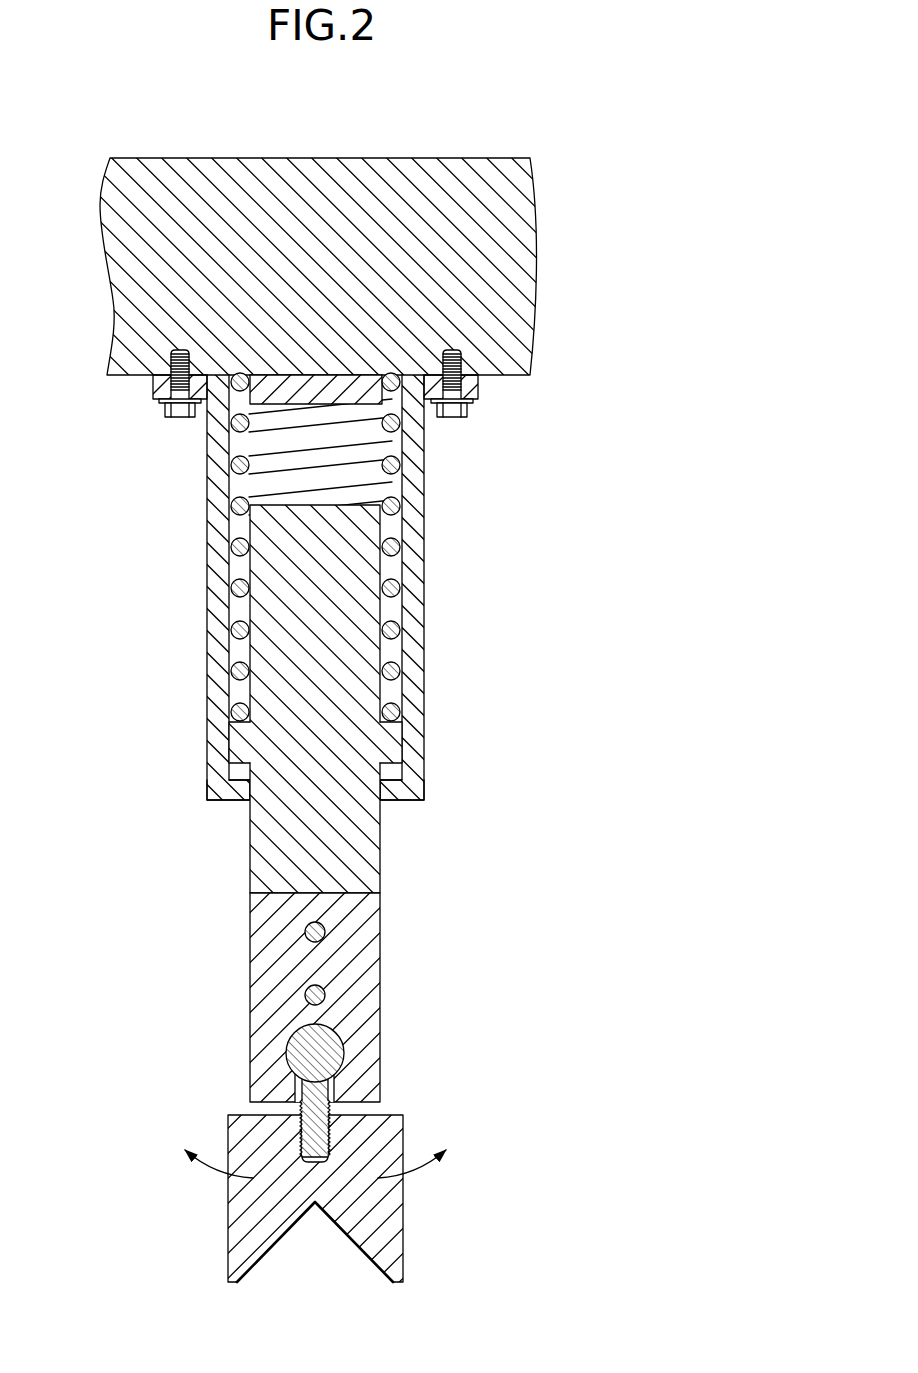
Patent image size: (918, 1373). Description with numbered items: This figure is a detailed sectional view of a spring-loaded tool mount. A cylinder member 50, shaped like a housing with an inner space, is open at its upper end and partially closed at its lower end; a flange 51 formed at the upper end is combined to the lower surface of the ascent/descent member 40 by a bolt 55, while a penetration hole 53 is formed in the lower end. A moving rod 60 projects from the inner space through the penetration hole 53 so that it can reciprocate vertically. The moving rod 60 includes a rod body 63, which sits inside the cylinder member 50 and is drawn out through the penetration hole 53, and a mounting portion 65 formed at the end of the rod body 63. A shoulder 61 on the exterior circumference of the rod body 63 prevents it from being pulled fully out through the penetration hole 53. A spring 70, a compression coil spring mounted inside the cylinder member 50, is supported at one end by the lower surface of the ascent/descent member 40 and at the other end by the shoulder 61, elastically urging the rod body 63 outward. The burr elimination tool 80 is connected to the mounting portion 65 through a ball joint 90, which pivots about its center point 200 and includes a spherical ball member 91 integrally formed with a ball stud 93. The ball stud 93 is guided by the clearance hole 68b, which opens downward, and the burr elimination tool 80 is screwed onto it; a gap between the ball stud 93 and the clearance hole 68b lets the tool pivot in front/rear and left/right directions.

The ascent/descent member 40 is at (520, 284).
The flange 51 is at (478, 383).
The bolt 55 is at (178, 418).
The cylinder member 50 is at (419, 610).
The penetration hole 53 is at (383, 799).
The spring 70 is at (234, 587).
The moving rod 60 is at (374, 803).
The shoulder 61 is at (238, 742).
The rod body 63 is at (239, 848).
The mounting portion 65 is at (239, 950).
The ball joint 90 is at (329, 1089).
The ball member 91 is at (338, 1050).
The ball stud 93 is at (340, 1105).
The clearance hole 68b is at (294, 1113).
The burr elimination tool 80 is at (320, 1196).
The center point 200 is at (329, 1178).